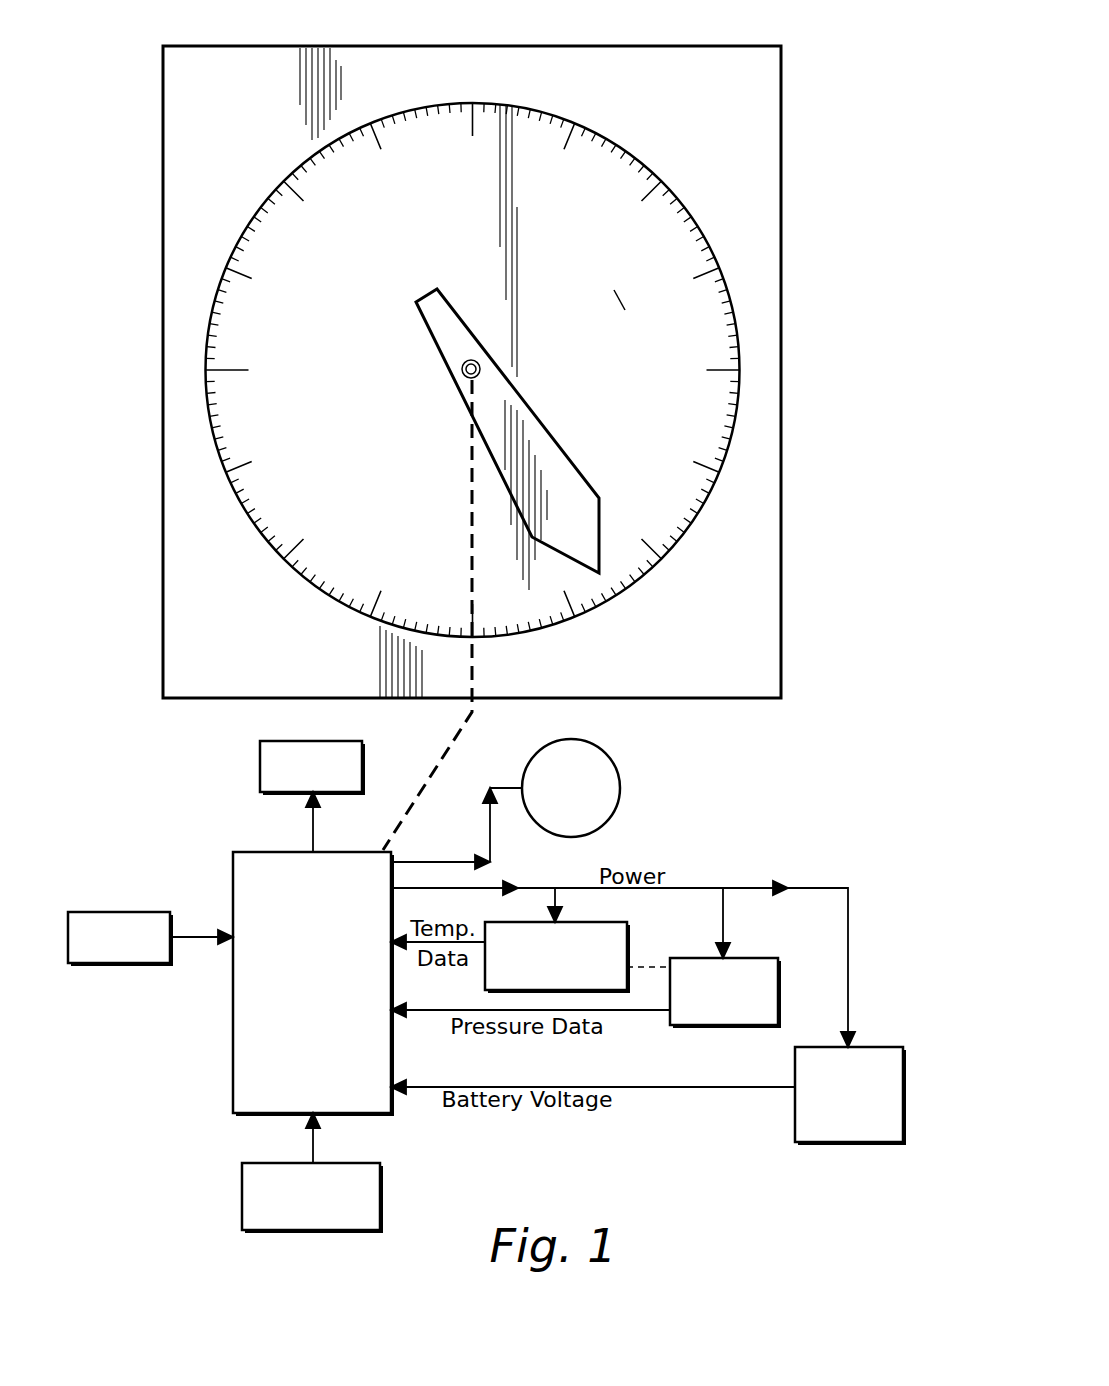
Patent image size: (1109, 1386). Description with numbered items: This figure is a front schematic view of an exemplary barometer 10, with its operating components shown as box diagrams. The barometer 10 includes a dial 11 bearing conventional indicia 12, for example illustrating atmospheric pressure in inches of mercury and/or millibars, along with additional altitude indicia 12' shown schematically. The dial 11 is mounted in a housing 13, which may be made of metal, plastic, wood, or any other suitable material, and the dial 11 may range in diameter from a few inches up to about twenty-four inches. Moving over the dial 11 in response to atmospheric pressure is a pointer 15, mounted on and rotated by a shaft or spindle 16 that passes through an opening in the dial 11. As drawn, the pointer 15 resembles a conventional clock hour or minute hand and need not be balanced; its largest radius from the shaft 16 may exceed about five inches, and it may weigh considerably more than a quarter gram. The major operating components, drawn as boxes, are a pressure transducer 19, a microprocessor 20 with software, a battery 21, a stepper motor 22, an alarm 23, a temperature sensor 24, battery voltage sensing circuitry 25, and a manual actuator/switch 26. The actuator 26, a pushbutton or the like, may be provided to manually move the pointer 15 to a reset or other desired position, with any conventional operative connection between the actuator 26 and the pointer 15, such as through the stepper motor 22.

The barometer 10 is at (829, 108).
The dial 11 is at (618, 296).
The indicia 12 is at (486, 380).
The altitude indicia 12' is at (304, 340).
The housing 13 is at (782, 325).
The pointer 15 is at (503, 410).
The shaft or spindle 16 is at (474, 360).
The pressure transducer 19 is at (778, 985).
The microprocessor 20 is at (233, 1018).
The battery 21 is at (112, 912).
The stepper motor 22 is at (613, 753).
The alarm 23 is at (260, 765).
The temperature sensor 24 is at (627, 942).
The battery voltage sensing circuitry 25 is at (842, 1144).
The manual actuator/switch 26 is at (380, 1197).